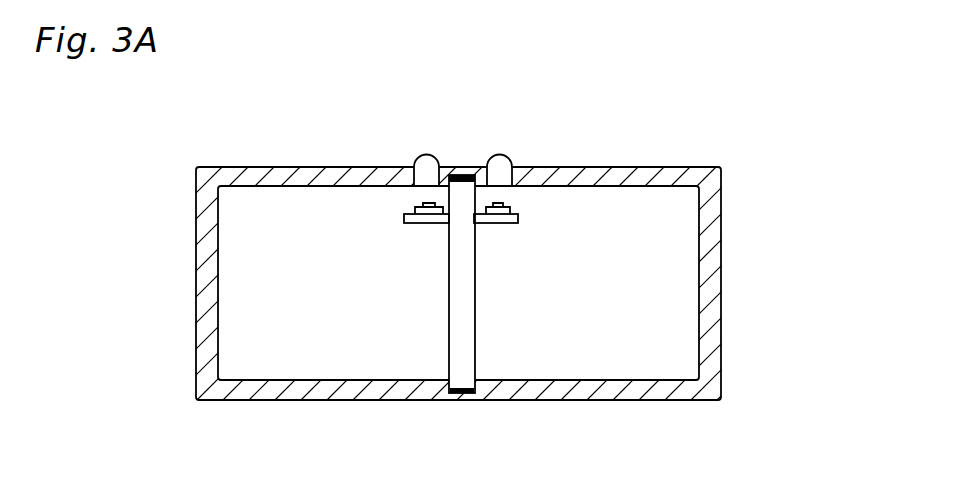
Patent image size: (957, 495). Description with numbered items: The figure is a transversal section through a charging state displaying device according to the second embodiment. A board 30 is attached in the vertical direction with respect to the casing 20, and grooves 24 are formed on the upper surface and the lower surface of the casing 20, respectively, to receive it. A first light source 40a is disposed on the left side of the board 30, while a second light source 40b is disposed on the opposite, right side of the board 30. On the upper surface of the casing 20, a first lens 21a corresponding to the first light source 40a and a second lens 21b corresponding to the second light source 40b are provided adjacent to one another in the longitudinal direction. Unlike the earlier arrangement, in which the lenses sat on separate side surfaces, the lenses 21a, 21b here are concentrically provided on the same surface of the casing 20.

The casing 20 is at (657, 175).
The first lens 21a is at (417, 162).
The second lens 21b is at (513, 162).
The groove 24 is at (468, 173).
The board 30 is at (460, 337).
The first light source 40a is at (425, 223).
The second light source 40b is at (500, 223).